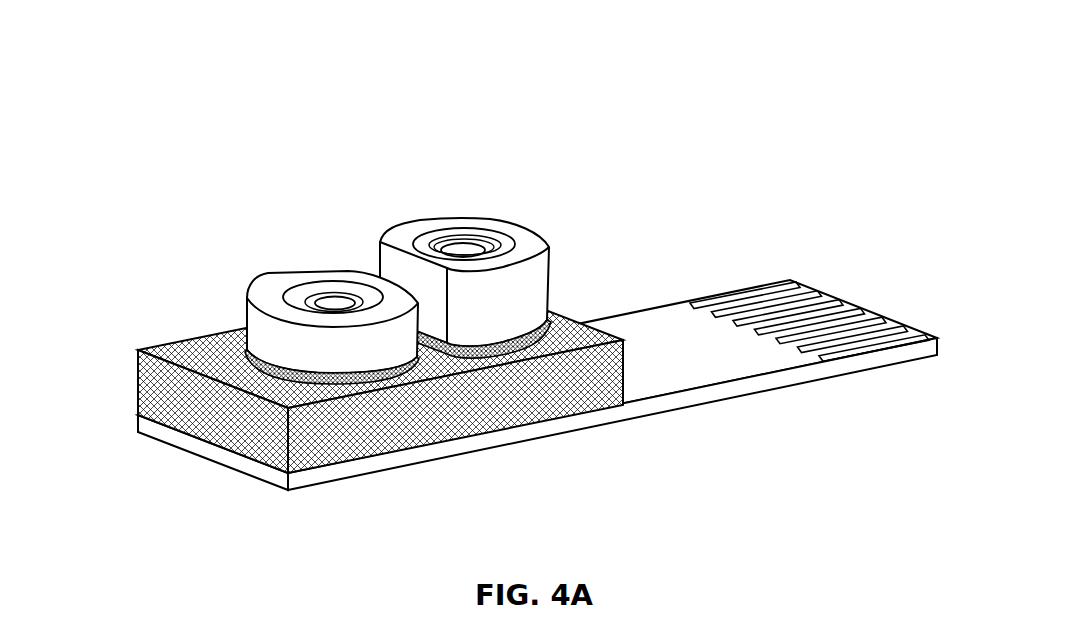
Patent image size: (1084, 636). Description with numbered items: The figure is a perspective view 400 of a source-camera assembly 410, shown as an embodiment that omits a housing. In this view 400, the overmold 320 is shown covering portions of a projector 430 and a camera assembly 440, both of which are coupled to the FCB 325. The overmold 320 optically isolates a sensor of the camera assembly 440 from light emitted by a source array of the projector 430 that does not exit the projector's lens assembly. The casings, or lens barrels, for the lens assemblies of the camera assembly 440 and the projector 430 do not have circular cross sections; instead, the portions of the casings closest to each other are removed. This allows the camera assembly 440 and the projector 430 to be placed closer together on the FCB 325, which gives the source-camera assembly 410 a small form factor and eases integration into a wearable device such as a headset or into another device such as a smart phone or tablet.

The perspective view 400 is at (85, 38).
The source-camera assembly 410 is at (384, 218).
The projector 430 is at (522, 237).
The camera assembly 440 is at (263, 297).
The overmold 320 is at (239, 418).
The FCB 325 is at (713, 363).